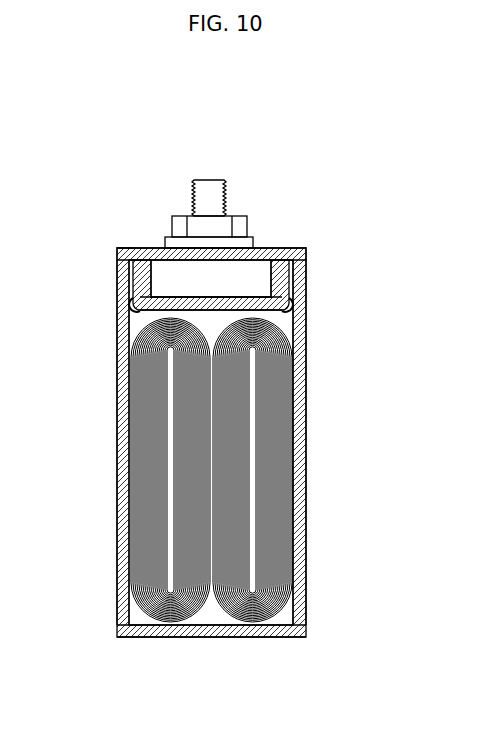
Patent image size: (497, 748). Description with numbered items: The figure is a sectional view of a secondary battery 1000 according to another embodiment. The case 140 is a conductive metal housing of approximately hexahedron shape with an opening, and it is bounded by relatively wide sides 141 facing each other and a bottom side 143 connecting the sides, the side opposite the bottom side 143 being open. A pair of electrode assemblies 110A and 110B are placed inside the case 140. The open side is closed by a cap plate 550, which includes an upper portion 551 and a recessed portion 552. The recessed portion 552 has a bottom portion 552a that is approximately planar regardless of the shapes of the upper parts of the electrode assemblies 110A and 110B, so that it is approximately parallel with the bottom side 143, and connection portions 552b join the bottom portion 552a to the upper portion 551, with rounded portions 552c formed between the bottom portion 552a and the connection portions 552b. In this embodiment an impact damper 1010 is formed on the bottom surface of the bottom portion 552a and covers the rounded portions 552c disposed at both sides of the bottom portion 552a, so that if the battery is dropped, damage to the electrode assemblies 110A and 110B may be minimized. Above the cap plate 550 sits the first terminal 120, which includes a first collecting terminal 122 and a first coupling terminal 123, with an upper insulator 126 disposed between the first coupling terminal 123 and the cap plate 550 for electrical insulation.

The secondary battery 1000 is at (322, 148).
The first terminal 120 is at (191, 171).
The first collecting terminal 122 is at (213, 179).
The first coupling terminal 123 is at (177, 216).
The upper insulator 126 is at (166, 241).
The case 140 is at (315, 468).
The wide sides 141 is at (117, 402).
The bottom side 143 is at (287, 640).
The cap plate 550 is at (312, 250).
The upper portion 551 is at (119, 247).
The recessed portion 552 is at (157, 257).
The bottom portion 552a is at (226, 292).
The connection portions 552b is at (266, 258).
The rounded portions 552c is at (292, 301).
The impact damper 1010 is at (257, 506).
The electrode assembly 110A is at (168, 631).
The electrode assembly 110B is at (253, 631).